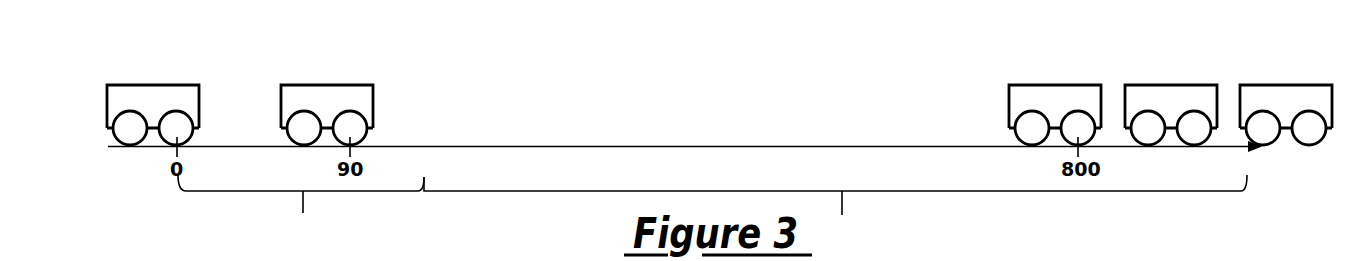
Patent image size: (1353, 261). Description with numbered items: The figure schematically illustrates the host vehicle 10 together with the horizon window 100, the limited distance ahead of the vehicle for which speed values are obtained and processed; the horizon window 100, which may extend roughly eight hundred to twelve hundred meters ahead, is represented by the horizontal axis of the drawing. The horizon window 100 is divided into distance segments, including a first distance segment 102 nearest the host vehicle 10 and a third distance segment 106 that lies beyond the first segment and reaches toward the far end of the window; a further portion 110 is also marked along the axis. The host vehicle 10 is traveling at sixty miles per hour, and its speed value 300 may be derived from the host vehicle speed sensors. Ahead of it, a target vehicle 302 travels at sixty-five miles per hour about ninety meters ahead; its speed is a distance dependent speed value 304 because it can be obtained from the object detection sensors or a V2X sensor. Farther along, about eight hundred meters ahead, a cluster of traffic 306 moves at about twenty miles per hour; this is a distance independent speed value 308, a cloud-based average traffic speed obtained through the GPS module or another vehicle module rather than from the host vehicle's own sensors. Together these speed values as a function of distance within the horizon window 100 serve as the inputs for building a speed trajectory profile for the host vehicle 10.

The host vehicle 10 is at (192, 105).
The horizon window 100 is at (1118, 147).
The first distance segment 102 is at (301, 205).
The third distance segment 106 is at (835, 205).
The track portion 110 is at (331, 258).
The speed value 300 is at (186, 73).
The target vehicle 302 is at (365, 105).
The distance dependent speed value 304 is at (360, 73).
The cluster of traffic 306 is at (1162, 62).
The distance independent speed value 308 is at (1086, 73).